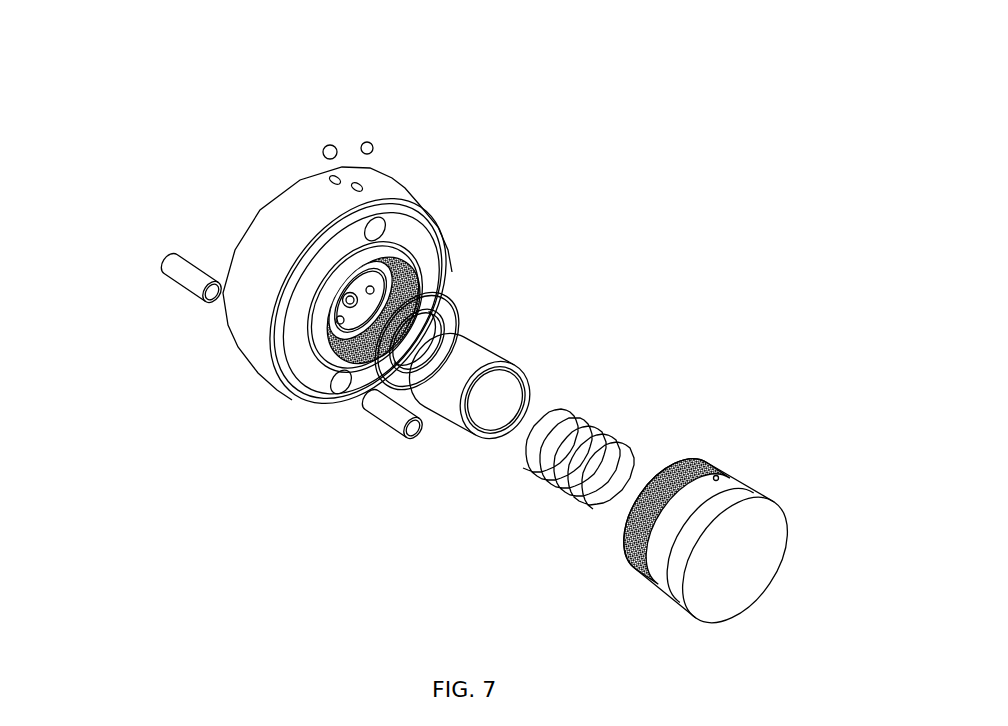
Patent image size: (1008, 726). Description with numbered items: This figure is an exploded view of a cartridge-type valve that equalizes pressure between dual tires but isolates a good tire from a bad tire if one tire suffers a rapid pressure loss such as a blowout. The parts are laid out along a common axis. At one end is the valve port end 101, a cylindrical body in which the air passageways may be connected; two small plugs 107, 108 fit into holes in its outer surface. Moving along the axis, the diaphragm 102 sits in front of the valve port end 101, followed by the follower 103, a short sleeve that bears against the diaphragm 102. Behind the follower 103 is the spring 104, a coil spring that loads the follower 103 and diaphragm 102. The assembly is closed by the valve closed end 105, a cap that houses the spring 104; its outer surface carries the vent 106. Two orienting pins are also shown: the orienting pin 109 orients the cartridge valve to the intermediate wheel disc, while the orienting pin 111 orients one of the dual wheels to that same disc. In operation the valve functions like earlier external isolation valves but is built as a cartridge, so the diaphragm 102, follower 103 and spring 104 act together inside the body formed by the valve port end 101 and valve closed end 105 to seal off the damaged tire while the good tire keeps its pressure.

The valve port end 101 is at (384, 260).
The diaphragm 102 is at (487, 286).
The follower 103 is at (541, 339).
The spring 104 is at (647, 404).
The valve closed end 105 is at (750, 520).
The vent 106 is at (730, 468).
The plug 107 is at (258, 106).
The plug 108 is at (407, 89).
The orienting pin 109 is at (323, 467).
The orienting pin 111 is at (130, 327).